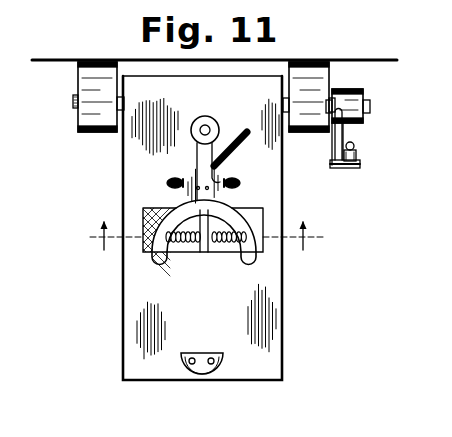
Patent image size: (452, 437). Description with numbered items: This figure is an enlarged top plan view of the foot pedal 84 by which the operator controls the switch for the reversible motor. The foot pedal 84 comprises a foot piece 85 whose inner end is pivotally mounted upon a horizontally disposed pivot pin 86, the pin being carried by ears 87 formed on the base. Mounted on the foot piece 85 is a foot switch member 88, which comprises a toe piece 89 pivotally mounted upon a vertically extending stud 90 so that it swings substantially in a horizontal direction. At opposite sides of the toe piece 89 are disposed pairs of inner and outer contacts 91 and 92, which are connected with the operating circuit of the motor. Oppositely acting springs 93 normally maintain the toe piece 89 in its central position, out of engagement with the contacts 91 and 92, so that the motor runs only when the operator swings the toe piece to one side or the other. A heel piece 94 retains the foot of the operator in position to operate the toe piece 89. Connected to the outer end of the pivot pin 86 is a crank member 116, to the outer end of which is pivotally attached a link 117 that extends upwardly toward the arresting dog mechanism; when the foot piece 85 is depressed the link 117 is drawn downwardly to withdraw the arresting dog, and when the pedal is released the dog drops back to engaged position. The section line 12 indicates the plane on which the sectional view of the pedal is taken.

The section line 12- 12 is at (208, 247).
The foot pedal 84 is at (121, 157).
The foot piece 85 is at (272, 340).
The pivot pin 86 is at (370, 104).
The ears 87 is at (96, 79).
The foot switch member 88 is at (228, 208).
The toe piece 89 is at (163, 237).
The stud 90 is at (207, 127).
The inner contacts 91 is at (186, 190).
The outer contacts 92 is at (216, 179).
The springs 93 is at (222, 243).
The heel piece 94 is at (207, 357).
The crank member 116 is at (340, 136).
The link 117 is at (362, 151).